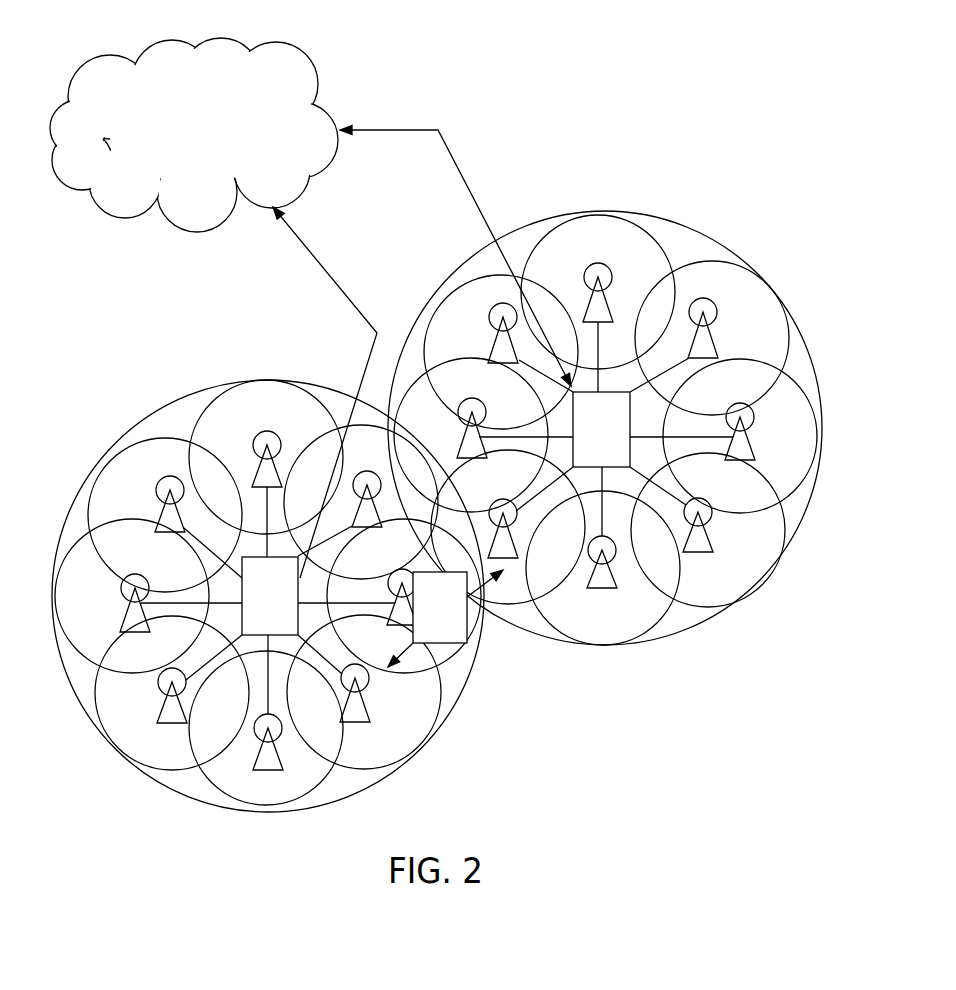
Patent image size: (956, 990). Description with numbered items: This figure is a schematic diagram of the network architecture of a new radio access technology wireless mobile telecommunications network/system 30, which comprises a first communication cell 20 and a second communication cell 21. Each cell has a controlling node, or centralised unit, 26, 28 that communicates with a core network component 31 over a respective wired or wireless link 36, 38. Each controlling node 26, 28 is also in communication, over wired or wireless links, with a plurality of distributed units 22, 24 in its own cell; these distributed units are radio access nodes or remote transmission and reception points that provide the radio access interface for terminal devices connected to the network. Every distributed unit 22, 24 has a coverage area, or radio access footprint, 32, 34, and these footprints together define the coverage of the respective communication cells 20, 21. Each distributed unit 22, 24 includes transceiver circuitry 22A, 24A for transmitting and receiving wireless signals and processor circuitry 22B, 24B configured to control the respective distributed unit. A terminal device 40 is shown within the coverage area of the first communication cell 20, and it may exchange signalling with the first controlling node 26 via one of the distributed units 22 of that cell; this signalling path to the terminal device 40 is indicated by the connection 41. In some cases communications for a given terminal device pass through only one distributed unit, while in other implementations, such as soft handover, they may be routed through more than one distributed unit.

The first communication cell 20 is at (180, 394).
The second communication cell 21 is at (605, 210).
The distributed unit 22 is at (127, 615).
The transceiver circuitry 22A is at (363, 670).
The processor circuitry 22B is at (368, 714).
The distributed unit 24 is at (758, 443).
The transceiver circuitry 24A is at (712, 522).
The processor circuitry 24B is at (717, 545).
The controlling node 26 is at (285, 609).
The controlling node 28 is at (619, 444).
The new RAT wireless mobile telecommunications network/system 30 is at (597, 99).
The core network component 31 is at (212, 140).
The coverage area 32 is at (76, 540).
The coverage area 34 is at (705, 262).
The wired or wireless link 36 is at (320, 263).
The wired or wireless link 38 is at (404, 130).
The terminal device 40 is at (440, 645).
The wireless connection 41 is at (512, 586).